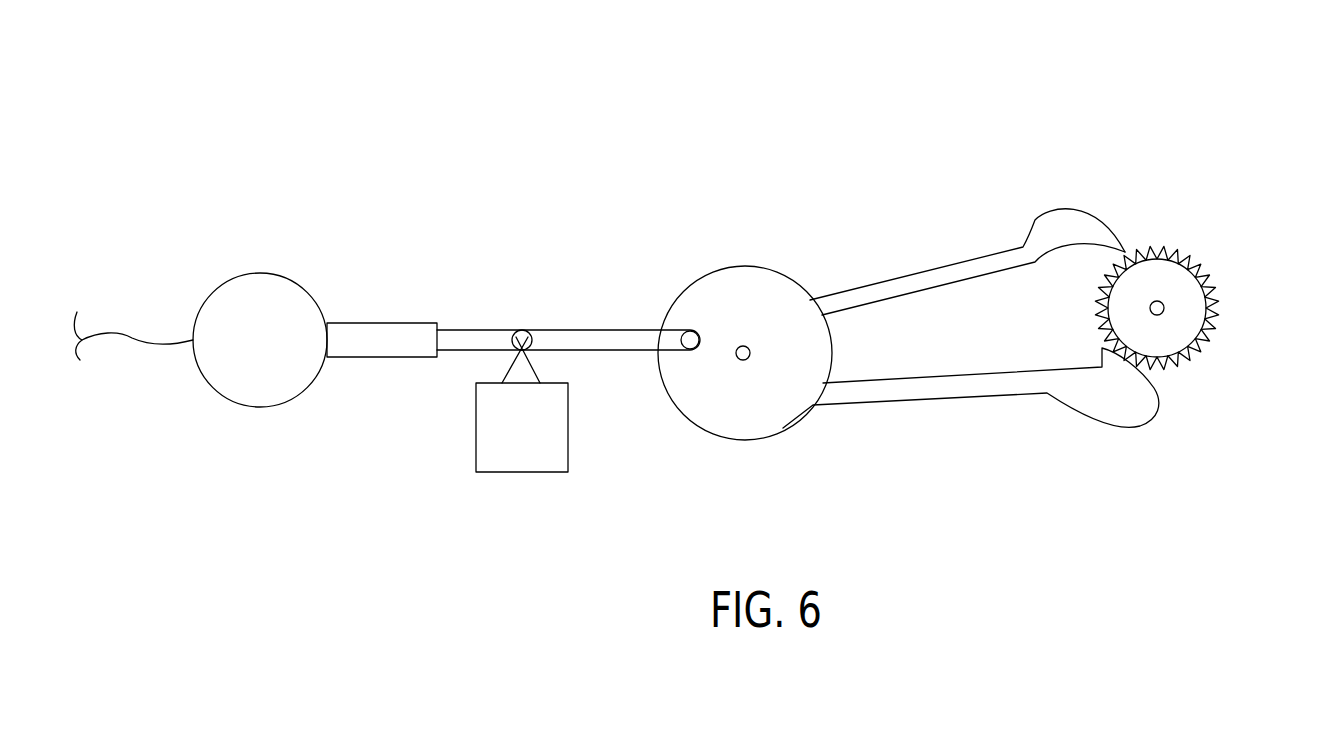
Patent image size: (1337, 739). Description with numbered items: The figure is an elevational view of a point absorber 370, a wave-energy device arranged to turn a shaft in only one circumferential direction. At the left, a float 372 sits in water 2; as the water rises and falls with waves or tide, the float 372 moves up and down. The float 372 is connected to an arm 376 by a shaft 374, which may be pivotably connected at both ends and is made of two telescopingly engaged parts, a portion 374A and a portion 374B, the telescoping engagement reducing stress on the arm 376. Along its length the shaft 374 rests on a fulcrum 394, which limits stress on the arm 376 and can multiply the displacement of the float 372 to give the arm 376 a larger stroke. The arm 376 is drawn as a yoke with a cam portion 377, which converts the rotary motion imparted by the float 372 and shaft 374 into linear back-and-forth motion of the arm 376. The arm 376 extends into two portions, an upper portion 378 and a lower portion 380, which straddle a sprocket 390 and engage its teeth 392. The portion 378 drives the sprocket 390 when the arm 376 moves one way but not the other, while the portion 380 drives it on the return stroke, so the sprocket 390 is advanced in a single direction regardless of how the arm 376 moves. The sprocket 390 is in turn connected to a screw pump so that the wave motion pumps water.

The water 2 is at (132, 340).
The point absorber 370 is at (594, 93).
The float 372 is at (207, 388).
The shaft 374 is at (513, 338).
The portion 374A is at (453, 344).
The portion 374B is at (357, 343).
The arm 376 is at (763, 293).
The cam portion 377 is at (730, 432).
The portion 378 is at (1072, 207).
The portion 380 is at (1082, 415).
The sprocket 390 is at (1158, 301).
The teeth 392 is at (1187, 357).
The fulcrum 394 is at (533, 455).